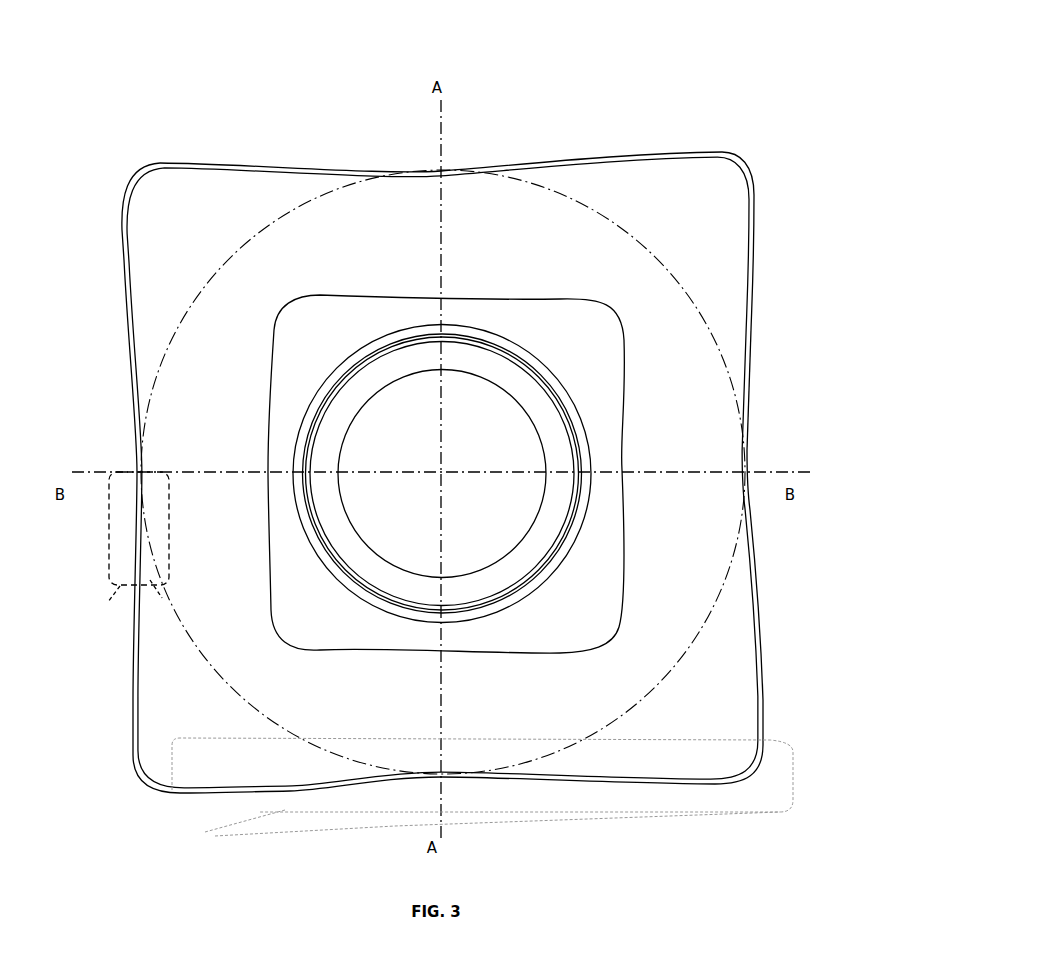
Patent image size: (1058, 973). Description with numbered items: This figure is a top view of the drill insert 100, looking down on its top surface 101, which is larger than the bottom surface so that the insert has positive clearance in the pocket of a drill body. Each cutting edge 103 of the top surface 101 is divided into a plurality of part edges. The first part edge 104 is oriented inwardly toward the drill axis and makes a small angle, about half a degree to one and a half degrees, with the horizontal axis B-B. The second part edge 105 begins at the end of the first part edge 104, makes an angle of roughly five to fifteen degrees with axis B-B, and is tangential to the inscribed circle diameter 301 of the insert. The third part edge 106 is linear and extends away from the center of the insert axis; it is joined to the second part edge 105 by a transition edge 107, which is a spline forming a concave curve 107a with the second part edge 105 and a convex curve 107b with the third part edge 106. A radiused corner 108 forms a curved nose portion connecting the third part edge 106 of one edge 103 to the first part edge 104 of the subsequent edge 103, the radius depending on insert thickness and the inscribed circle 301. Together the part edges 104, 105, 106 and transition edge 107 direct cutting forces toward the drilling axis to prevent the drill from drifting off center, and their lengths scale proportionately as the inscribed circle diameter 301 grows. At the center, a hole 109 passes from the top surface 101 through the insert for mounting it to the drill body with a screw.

The drill insert 100 is at (454, 403).
The top surface 101 is at (166, 650).
The edge 103 is at (478, 791).
The first part edge 104 is at (767, 707).
The second part edge 105 is at (762, 600).
The third part edge 106 is at (754, 280).
The transition edge 107 is at (121, 553).
The concave curve 107a is at (752, 474).
The convex curve 107b is at (752, 378).
The corner 108 is at (746, 172).
The hole 109 is at (390, 422).
The inscribed circle diameter 301 is at (243, 243).